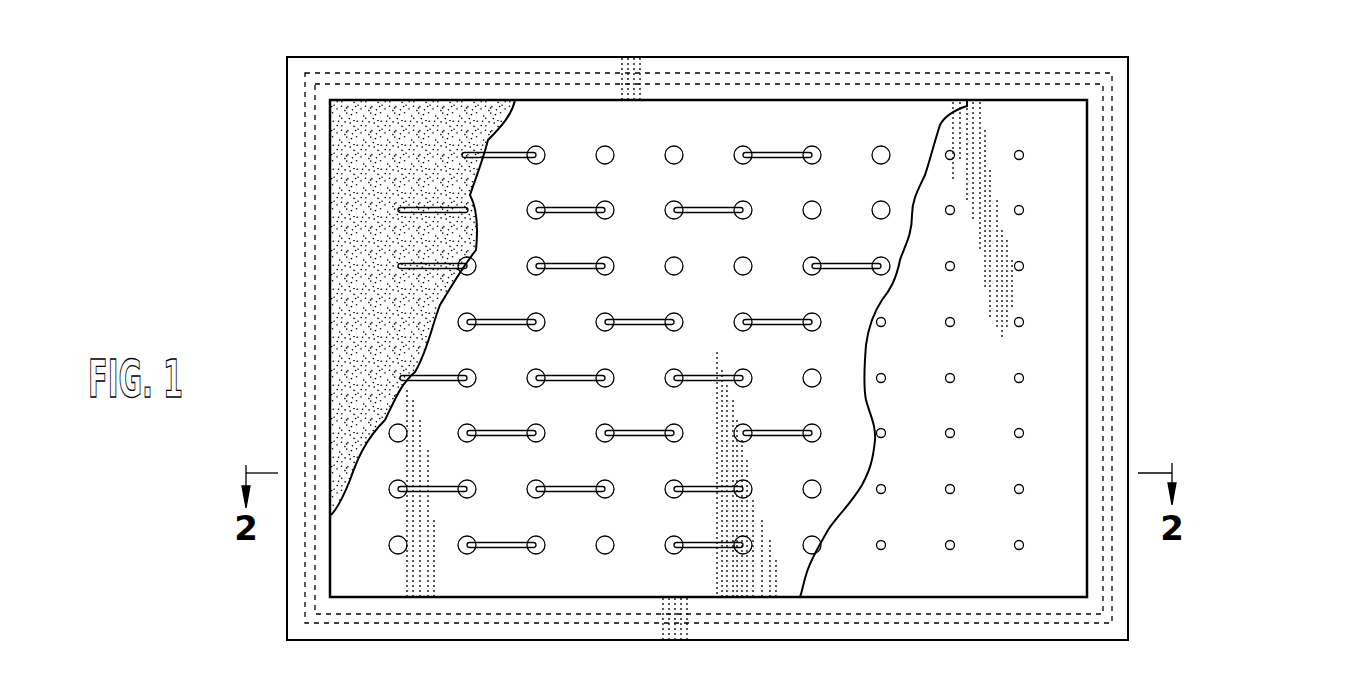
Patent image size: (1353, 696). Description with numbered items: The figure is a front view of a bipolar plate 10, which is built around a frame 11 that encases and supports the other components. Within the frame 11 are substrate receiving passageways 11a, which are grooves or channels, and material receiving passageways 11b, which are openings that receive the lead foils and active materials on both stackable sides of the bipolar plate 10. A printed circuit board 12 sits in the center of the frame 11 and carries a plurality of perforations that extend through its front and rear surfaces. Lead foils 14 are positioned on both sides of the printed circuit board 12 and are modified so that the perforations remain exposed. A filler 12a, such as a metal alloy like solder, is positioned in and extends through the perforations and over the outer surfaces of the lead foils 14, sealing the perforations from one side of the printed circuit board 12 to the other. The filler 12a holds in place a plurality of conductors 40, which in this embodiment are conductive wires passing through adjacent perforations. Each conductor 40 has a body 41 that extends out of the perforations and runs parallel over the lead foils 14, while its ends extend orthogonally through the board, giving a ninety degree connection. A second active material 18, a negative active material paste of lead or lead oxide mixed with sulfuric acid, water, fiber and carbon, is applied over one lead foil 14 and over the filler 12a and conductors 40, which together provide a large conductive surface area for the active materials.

The bipolar plate 10 is at (1162, 57).
The frame 11 is at (1128, 242).
The substrate receiving passageways 11a is at (493, 75).
The material receiving passageways 11b is at (1062, 157).
The printed circuit board 12 is at (864, 348).
The filler 12a is at (467, 442).
The lead foils 14 is at (708, 348).
The second active material 18 is at (423, 348).
The conductors 40 is at (778, 152).
The body 41 is at (712, 549).